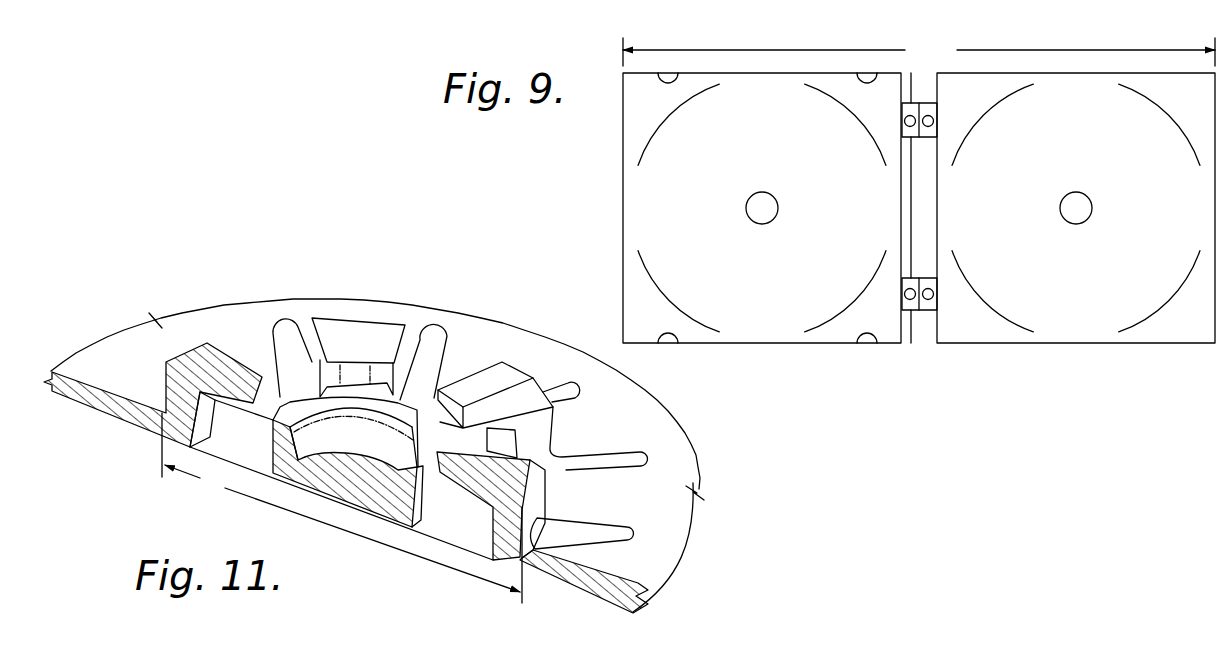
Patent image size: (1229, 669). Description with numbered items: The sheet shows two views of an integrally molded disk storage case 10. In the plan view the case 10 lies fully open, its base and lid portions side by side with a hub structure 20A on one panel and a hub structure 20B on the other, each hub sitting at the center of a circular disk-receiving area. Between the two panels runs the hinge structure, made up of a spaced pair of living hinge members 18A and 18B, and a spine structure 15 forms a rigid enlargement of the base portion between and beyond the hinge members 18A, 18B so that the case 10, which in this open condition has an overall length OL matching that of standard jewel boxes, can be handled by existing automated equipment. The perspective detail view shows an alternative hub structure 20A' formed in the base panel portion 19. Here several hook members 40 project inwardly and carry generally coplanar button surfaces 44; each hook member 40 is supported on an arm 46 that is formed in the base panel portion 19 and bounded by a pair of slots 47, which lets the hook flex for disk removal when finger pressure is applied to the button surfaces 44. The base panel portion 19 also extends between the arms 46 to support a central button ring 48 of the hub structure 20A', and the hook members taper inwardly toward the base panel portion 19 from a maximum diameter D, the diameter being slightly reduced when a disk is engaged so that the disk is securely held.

In FIG. 9, the storage case 10 is at (862, 209).
In FIG. 9, the spine structure 15 is at (921, 344).
In FIG. 9, the hinge member 18A is at (911, 104).
In FIG. 9, the hinge member 18B is at (911, 316).
In FIG. 9, the hub structure 20A is at (1103, 202).
In FIG. 9, the hub structure 20B is at (784, 223).
In FIG. 11, the base panel portion 19 is at (677, 525).
In FIG. 11, the hook member 40 is at (205, 345).
In FIG. 11, the button surface 44 is at (372, 358).
In FIG. 11, the arm 46 is at (142, 388).
In FIG. 11, the slot 47 is at (593, 523).
In FIG. 11, the central button ring 48 is at (282, 358).
In FIG. 11, the hub structure 20A' is at (342, 500).